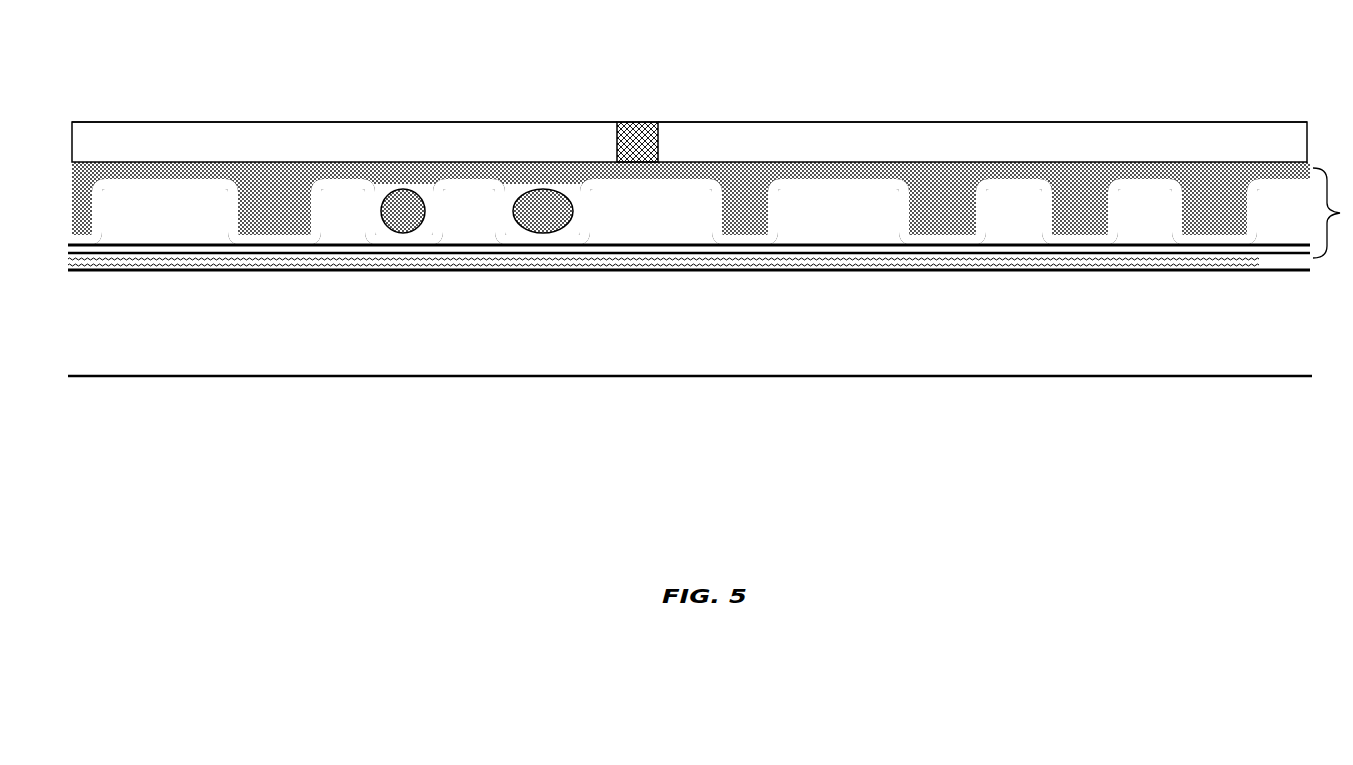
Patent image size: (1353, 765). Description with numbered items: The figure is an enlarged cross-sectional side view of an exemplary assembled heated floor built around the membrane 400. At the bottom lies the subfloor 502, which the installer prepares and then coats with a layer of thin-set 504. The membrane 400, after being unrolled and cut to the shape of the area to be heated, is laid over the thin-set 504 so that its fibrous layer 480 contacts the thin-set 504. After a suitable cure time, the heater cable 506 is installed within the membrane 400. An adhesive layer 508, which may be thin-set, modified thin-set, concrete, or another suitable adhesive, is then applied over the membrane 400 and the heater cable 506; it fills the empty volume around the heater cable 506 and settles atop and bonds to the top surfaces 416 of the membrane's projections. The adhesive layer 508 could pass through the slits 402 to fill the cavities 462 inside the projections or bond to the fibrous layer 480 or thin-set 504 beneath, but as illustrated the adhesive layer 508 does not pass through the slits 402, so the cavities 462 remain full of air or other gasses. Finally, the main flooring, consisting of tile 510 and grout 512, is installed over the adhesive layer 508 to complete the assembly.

The membrane 400 is at (1329, 193).
The slits 402 is at (797, 180).
The top surfaces 416 is at (343, 172).
The cavities 462 is at (650, 234).
The fibrous layer 480 is at (478, 253).
The subfloor 502 is at (165, 369).
The thin-set 504 is at (252, 263).
The heater cable 506 is at (395, 235).
The adhesive layer 508 is at (487, 164).
The tile 510 is at (597, 122).
The grout 512 is at (637, 122).